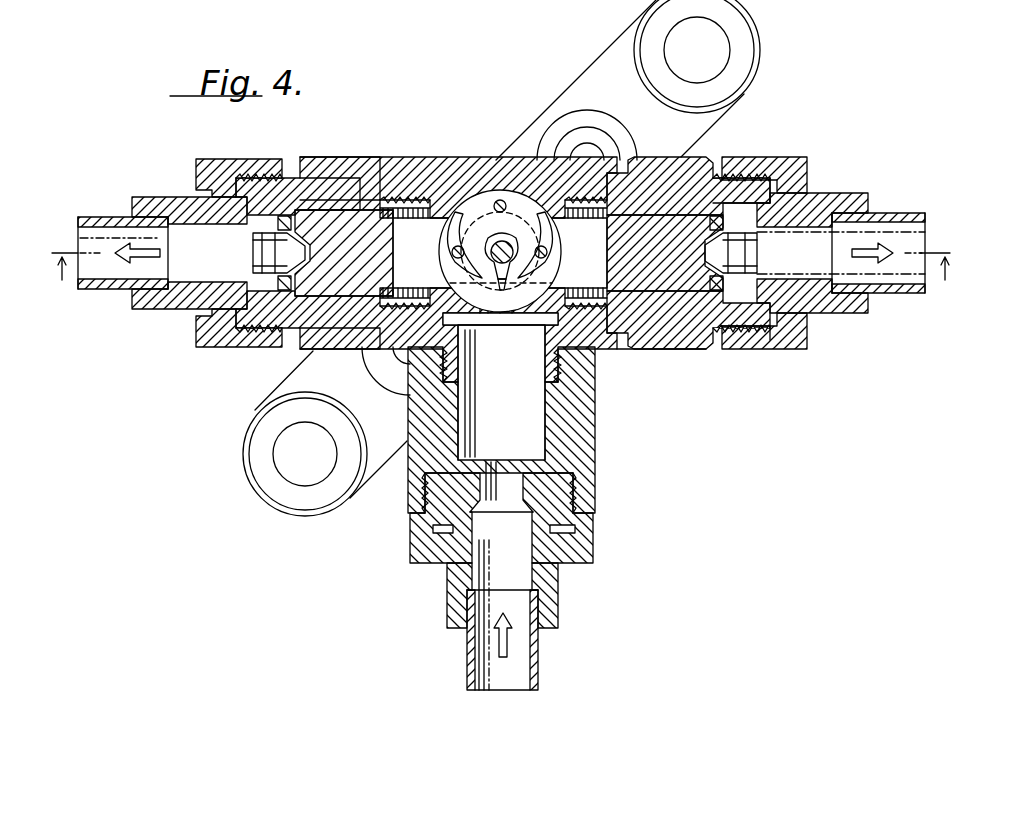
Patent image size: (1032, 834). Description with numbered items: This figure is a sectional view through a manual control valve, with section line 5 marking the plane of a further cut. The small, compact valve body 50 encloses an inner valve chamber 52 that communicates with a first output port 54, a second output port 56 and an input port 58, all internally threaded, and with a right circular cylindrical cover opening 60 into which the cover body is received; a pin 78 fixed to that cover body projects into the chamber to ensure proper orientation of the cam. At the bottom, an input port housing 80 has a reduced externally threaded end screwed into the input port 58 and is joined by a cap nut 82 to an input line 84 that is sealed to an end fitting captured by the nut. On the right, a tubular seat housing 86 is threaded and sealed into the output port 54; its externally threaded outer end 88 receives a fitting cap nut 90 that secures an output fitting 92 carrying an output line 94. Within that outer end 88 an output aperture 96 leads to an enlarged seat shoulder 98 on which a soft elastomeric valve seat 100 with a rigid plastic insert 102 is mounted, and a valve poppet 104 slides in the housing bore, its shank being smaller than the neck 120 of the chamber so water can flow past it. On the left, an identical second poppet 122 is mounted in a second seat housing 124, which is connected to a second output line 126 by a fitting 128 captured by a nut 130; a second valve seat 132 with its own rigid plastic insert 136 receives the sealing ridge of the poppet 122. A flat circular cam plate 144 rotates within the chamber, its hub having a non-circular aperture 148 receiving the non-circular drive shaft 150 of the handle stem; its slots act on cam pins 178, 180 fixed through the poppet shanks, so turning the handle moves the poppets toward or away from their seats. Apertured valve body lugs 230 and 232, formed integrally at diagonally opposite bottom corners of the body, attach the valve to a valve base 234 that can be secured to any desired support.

The section line 5- 5 is at (501, 287).
The valve body 50 is at (468, 157).
The inner valve chamber 52 is at (432, 298).
The first output port 54 is at (612, 349).
The second output port 56 is at (378, 318).
The input port 58 is at (592, 380).
The cover opening 60 is at (522, 203).
The pin 78 is at (497, 203).
The input port housing 80 is at (596, 433).
The cap nut 82 is at (595, 530).
The input line 84 is at (540, 668).
The seat housing 86 is at (558, 612).
The externally threaded outer end 88 is at (745, 336).
The fitting cap nut 90 is at (786, 157).
The output fitting 92 is at (838, 193).
The output line 94 is at (888, 213).
The output aperture 96 is at (742, 252).
The seat shoulder 98 is at (720, 224).
The valve seat 100 is at (707, 208).
The rigid plastic insert 102 is at (698, 264).
The valve poppet 104 is at (650, 198).
The neck 120 is at (568, 306).
The second poppet 122 is at (356, 202).
The second seat housing 124 is at (334, 157).
The second output line 126 is at (112, 217).
The fitting 128 is at (170, 197).
The nut 130 is at (233, 158).
The second valve seat 132 is at (283, 215).
The rigid plastic insert 136 is at (302, 263).
The cam plate 144 is at (570, 242).
The non-circular aperture 148 is at (502, 250).
The non-circular drive shaft 150 is at (500, 283).
The cam pin 178 is at (452, 252).
The cam pin 180 is at (547, 252).
The valve body lug 230 is at (368, 372).
The valve body lug 232 is at (585, 116).
The valve base 234 is at (362, 485).